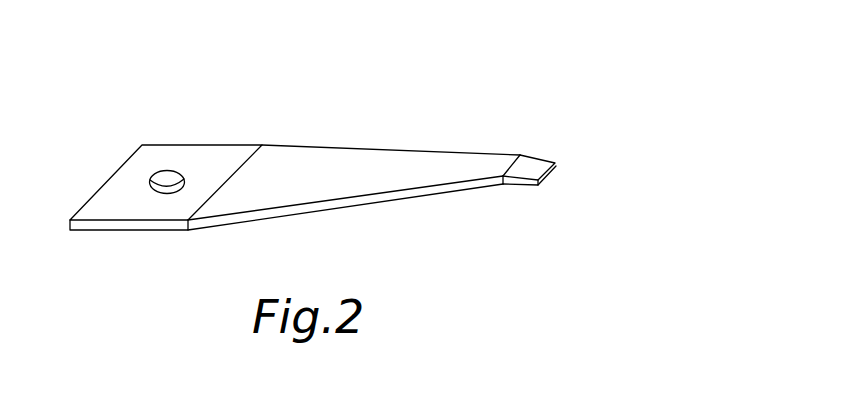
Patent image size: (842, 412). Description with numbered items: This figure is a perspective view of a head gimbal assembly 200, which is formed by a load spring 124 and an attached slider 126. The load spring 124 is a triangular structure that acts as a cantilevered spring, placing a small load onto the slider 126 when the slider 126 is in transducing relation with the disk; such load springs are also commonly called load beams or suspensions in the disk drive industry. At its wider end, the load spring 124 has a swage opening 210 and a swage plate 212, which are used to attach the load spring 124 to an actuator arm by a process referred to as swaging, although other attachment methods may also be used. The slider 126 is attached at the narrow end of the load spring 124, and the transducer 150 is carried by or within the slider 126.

The head gimbal assembly 200 is at (330, 138).
The swage opening 210 is at (151, 174).
The swage plate 212 is at (191, 151).
The load spring 124 is at (348, 200).
The slider 126 is at (517, 188).
The transducer 150 is at (549, 167).